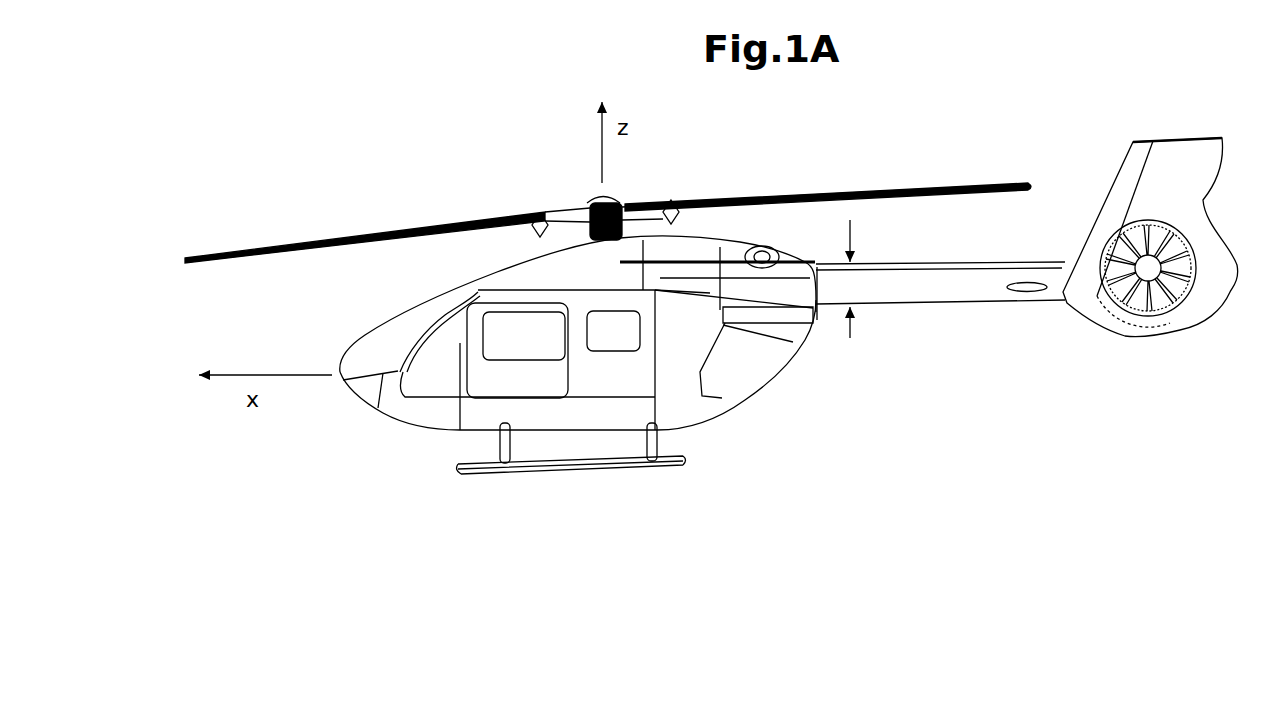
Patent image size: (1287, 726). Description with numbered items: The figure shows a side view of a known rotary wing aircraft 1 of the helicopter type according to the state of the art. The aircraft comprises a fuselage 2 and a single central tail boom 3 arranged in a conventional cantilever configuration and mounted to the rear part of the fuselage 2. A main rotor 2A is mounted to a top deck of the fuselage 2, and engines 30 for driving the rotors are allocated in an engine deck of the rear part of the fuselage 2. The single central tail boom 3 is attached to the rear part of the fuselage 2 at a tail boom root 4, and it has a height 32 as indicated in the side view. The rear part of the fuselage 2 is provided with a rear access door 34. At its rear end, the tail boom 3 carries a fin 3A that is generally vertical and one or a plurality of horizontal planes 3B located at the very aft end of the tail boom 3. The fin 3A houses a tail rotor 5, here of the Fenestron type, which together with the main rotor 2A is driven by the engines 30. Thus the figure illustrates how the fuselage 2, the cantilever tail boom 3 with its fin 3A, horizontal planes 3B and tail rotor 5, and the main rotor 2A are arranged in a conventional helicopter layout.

The rotary wing aircraft 1 is at (270, 292).
The fuselage 2 is at (784, 388).
The main rotor 2A is at (325, 234).
The single central tail boom 3 is at (949, 310).
The fin 3A is at (1182, 171).
The horizontal planes 3B is at (1025, 278).
The tail boom root 4 is at (816, 311).
The tail rotor 5 is at (1152, 296).
The engines 30 is at (703, 255).
The height 32 is at (850, 217).
The rear access door 34 is at (736, 371).